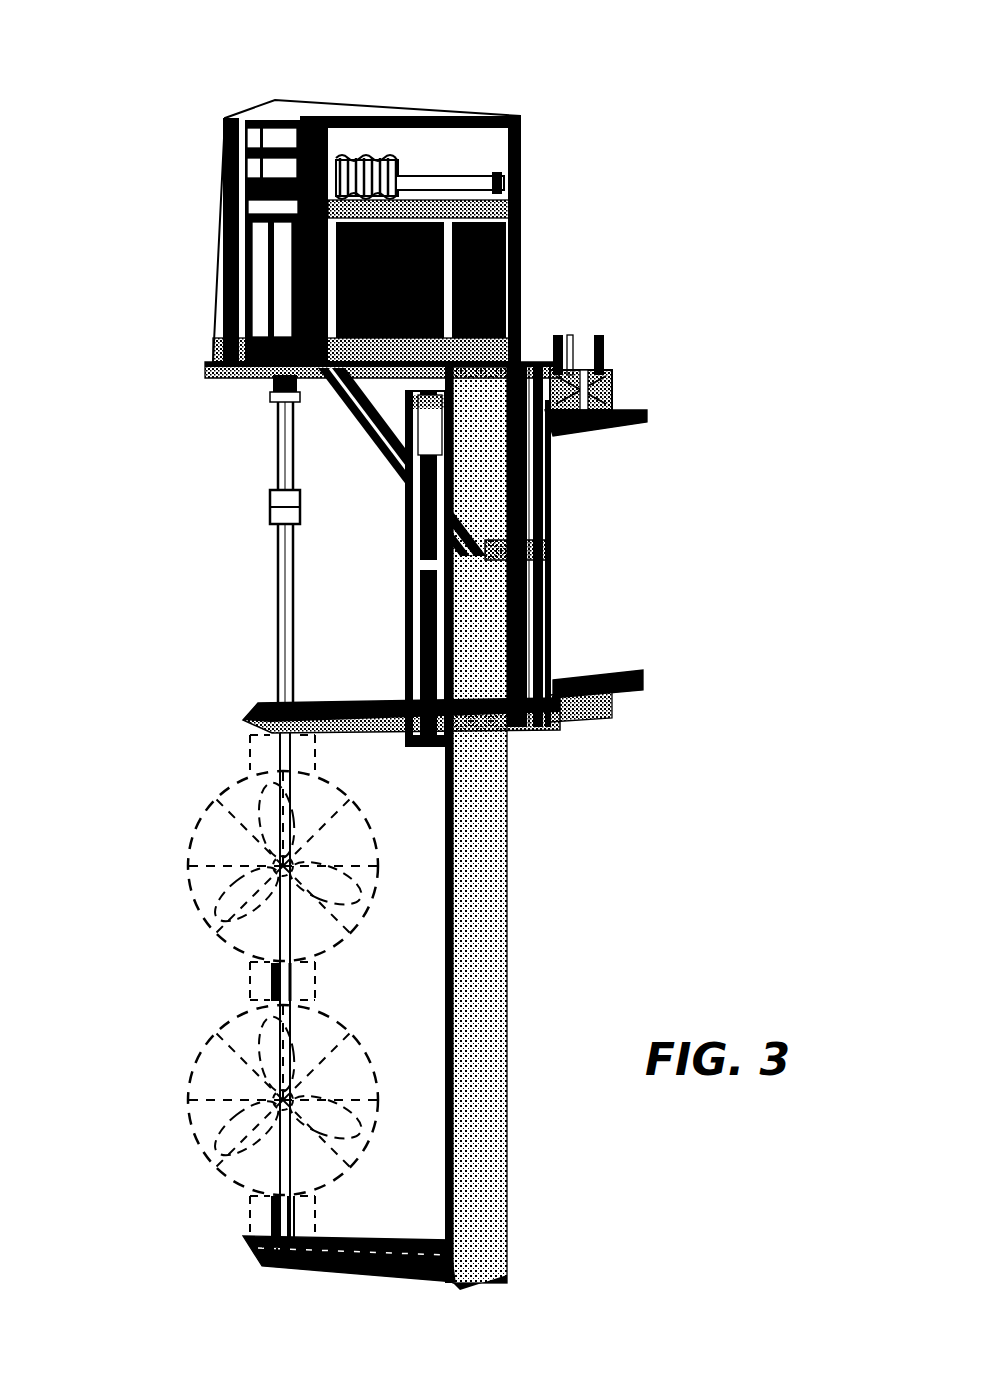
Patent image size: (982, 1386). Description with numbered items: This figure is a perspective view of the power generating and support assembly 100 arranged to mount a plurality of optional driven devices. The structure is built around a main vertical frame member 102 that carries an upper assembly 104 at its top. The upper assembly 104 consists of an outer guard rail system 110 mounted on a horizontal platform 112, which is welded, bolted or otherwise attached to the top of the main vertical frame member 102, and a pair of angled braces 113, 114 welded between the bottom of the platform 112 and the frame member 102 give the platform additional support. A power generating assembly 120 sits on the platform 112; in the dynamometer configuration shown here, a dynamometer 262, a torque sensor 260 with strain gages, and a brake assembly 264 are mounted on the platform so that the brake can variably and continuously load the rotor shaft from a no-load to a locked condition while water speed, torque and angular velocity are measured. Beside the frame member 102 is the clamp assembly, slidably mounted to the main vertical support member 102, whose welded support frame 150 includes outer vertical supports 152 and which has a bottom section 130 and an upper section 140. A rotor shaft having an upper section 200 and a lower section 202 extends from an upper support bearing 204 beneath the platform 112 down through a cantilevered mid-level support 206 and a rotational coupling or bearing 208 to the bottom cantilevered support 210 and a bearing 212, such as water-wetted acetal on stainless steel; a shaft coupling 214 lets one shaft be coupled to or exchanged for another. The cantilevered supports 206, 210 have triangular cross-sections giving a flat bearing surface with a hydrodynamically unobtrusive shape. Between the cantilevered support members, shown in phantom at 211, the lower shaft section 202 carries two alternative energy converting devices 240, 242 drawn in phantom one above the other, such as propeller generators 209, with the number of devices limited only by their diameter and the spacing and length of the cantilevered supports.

The power generating and support assembly 100 is at (712, 238).
The main vertical frame member 102 is at (490, 849).
The upper assembly 104 is at (540, 138).
The outer guard rail system 110 is at (368, 100).
The horizontal platform 112 is at (200, 366).
The angled brace 113 is at (408, 514).
The angled brace 114 is at (360, 440).
The power generating assembly 120 is at (190, 198).
The bottom section 130 is at (643, 700).
The upper section 140 is at (612, 382).
The support frame 150 is at (553, 480).
The outer vertical support 152 is at (550, 599).
The rotor shaft upper section 200 is at (278, 446).
The rotor shaft lower section 202 is at (262, 981).
The upper support bearing 204 is at (272, 396).
The cantilevered mid-level support 206 is at (245, 717).
The rotational coupling or bearing 208 is at (296, 702).
The propeller generator 209 is at (188, 835).
The bottom cantilevered support 210 is at (300, 1226).
The cantilevered support member 211 is at (250, 755).
The bearing 212 is at (262, 1244).
The shaft coupling 214 is at (300, 505).
The energy converting device 240 is at (188, 880).
The energy converting device 242 is at (188, 1118).
The torque sensor 260 is at (240, 290).
The dynamometer 262 is at (238, 135).
The brake assembly 264 is at (382, 158).